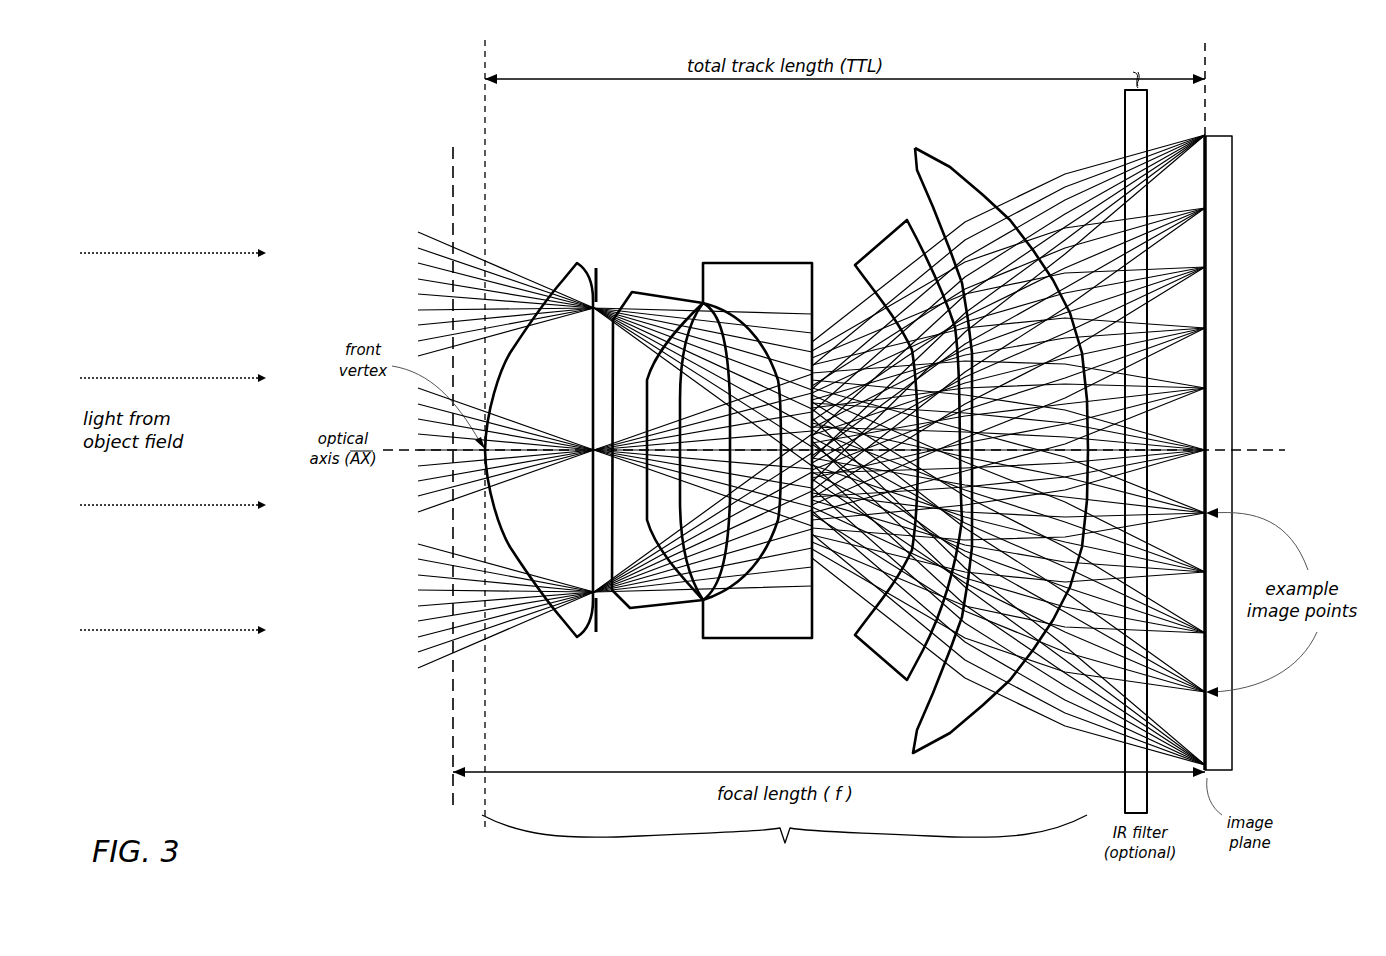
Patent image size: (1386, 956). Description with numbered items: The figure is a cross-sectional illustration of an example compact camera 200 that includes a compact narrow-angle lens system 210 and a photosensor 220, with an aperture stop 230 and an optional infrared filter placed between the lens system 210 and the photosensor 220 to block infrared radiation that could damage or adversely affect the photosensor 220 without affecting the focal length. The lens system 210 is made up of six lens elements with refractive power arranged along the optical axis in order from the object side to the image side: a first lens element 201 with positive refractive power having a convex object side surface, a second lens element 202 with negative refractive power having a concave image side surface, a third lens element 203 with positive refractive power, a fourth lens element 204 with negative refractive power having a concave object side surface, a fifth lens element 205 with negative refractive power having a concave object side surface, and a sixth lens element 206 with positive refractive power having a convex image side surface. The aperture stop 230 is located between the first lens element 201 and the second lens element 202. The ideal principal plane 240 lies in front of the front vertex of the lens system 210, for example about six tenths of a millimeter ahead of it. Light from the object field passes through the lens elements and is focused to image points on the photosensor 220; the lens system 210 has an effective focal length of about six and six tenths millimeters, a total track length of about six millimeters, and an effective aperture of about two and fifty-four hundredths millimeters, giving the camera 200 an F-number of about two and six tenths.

The camera 200 is at (335, 150).
The first lens element 201 is at (580, 262).
The second lens element 202 is at (678, 302).
The third lens element 203 is at (707, 583).
The fourth lens element 204 is at (753, 262).
The fifth lens element 205 is at (878, 245).
The sixth lens element 206 is at (953, 166).
The lens system 210 is at (784, 840).
The photosensor 220 is at (1232, 259).
The aperture stop 230 is at (594, 682).
The principal plane 240 is at (429, 456).